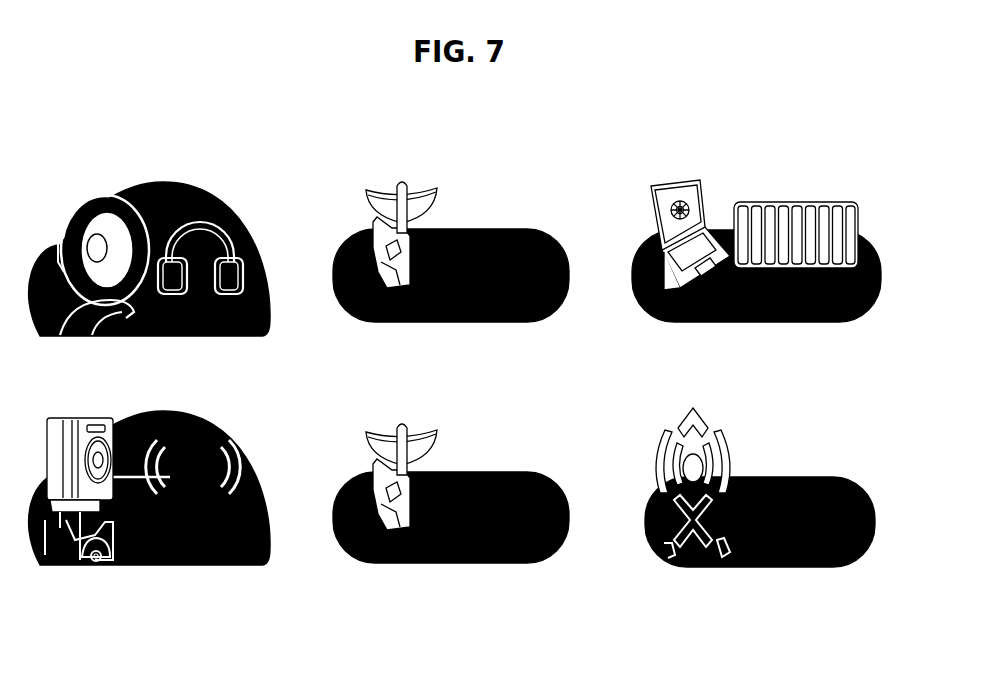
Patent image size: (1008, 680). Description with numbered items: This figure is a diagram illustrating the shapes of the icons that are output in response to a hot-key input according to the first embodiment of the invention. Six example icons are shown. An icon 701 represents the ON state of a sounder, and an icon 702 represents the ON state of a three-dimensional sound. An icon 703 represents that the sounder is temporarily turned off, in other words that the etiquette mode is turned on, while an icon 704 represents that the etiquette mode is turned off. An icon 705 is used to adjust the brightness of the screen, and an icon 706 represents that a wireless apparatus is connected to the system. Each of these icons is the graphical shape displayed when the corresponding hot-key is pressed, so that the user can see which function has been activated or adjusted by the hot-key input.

The icon representing the ON state of a sounder 701 is at (197, 175).
The icon representing the ON state of a three-dimensional sound 702 is at (122, 570).
The icon representing that the etiquette mode is turned on 703 is at (502, 172).
The icon representing that the etiquette mode is turned off 704 is at (427, 570).
The icon to adjust the brightness of the screen 705 is at (808, 172).
The icon representing that a wireless apparatus is connected to the system 706 is at (737, 570).